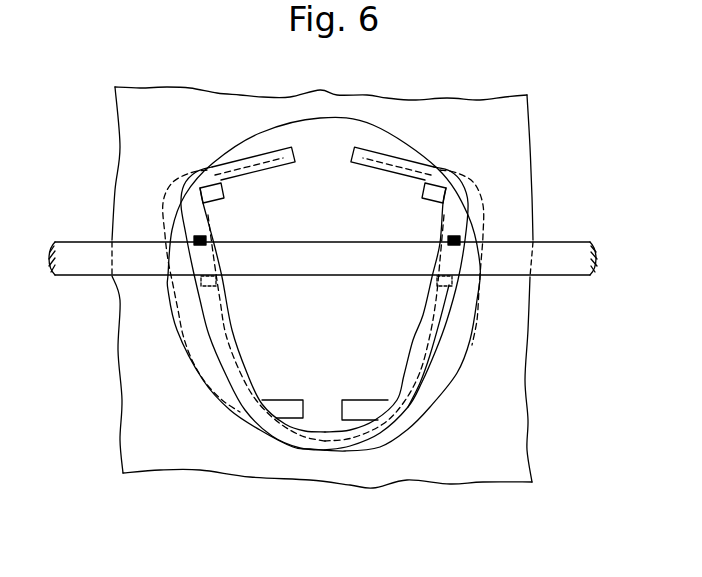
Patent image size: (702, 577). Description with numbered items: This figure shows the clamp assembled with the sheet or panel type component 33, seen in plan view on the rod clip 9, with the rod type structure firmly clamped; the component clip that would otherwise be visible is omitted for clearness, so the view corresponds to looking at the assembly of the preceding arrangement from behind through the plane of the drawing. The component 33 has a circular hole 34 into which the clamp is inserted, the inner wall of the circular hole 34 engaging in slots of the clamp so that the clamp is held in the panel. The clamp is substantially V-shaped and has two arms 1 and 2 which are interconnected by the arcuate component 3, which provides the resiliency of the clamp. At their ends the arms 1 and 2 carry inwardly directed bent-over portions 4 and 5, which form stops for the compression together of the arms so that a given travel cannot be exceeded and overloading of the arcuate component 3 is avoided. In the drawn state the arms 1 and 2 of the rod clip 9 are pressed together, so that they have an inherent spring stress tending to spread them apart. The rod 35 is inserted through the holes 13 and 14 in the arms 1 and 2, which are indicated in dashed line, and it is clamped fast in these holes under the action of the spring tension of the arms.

The arm 1 is at (223, 333).
The arm 2 is at (430, 357).
The arcuate component 3 is at (329, 286).
The bent-over portion 4 is at (281, 149).
The bent-over portion 5 is at (365, 150).
The rod clip 9 is at (240, 403).
The hole 13 is at (210, 285).
The hole 14 is at (447, 287).
The sheet or panel type component 33 is at (335, 96).
The circular hole 34 is at (468, 340).
The rod 35 is at (555, 245).